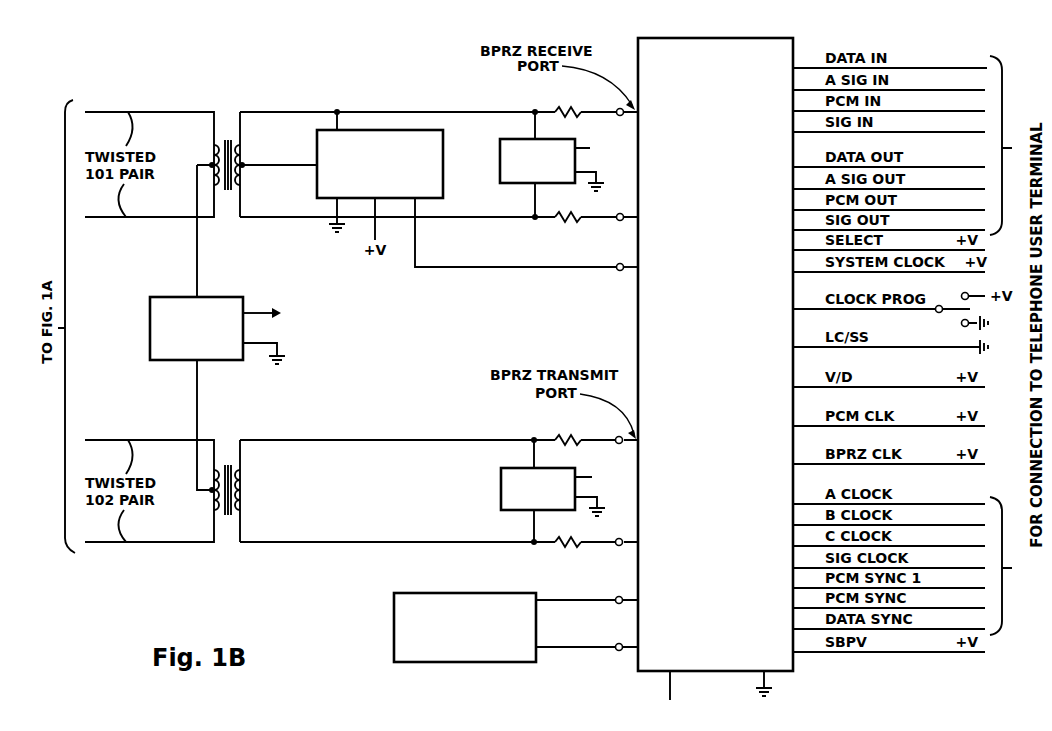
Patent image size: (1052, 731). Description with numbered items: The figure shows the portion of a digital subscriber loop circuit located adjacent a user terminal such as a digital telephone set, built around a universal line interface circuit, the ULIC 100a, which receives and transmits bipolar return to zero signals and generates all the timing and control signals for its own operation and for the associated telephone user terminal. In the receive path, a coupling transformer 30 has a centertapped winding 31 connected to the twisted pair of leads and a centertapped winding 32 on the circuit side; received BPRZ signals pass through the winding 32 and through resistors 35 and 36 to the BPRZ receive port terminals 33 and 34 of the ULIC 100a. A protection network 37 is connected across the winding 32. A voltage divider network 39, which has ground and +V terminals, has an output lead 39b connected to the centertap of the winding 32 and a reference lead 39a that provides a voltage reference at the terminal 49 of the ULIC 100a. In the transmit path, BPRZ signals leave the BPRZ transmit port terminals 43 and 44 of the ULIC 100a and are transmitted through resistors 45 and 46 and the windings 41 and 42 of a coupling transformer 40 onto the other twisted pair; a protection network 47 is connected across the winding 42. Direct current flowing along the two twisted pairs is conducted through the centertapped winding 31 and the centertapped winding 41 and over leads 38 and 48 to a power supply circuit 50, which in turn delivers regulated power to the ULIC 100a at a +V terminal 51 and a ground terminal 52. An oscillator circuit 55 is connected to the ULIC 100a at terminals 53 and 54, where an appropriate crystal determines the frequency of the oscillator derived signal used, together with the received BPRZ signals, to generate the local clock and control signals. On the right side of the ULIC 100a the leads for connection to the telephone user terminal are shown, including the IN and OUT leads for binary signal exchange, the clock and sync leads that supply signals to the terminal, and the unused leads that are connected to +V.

The coupling transformer 30 is at (228, 145).
The centertapped winding 31 is at (212, 160).
The centertapped winding 32 is at (245, 170).
The BPRZ receive port terminal 33 is at (617, 116).
The BPRZ receive port terminal 34 is at (617, 222).
The resistor 35 is at (568, 107).
The resistor 36 is at (568, 223).
The protection network 37 is at (500, 158).
The lead 38 is at (197, 258).
The voltage divider network 39 is at (443, 153).
The reference lead 39a is at (527, 267).
The output lead 39b is at (305, 162).
The coupling transformer 40 is at (229, 517).
The centertapped winding 41 is at (212, 498).
The winding 42 is at (243, 493).
The BPRZ transmit port terminal 43 is at (616, 445).
The BPRZ transmit port terminal 44 is at (618, 548).
The resistor 45 is at (569, 434).
The resistor 46 is at (569, 548).
The protection network 47 is at (501, 488).
The lead 48 is at (197, 405).
The terminal 49 is at (617, 272).
The power supply circuit 50 is at (150, 328).
The +V terminal 51 is at (258, 313).
The ground terminal 52 is at (288, 344).
The terminal 53 is at (616, 652).
The terminal 54 is at (616, 605).
The oscillator circuit 55 is at (435, 593).
The ULIC 100a is at (638, 341).